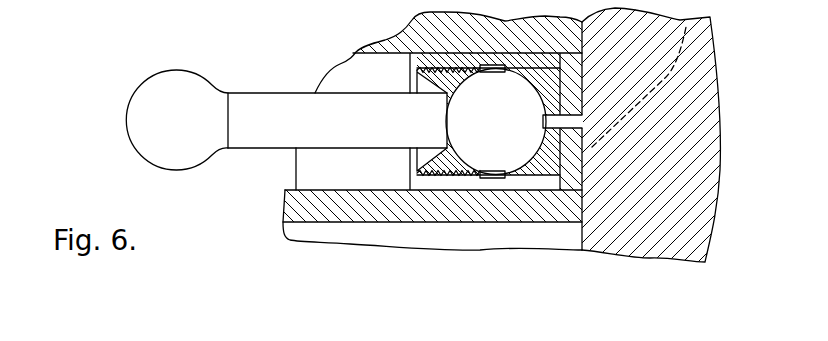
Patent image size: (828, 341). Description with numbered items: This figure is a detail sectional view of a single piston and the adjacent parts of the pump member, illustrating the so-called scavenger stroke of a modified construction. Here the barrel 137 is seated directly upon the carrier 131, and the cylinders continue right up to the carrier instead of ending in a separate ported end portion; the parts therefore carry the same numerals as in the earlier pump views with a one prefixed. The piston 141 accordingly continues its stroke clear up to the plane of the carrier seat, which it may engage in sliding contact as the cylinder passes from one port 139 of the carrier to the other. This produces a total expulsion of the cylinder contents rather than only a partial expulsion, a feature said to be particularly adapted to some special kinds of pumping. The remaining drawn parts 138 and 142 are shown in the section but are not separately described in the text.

The carrier 131 is at (672, 262).
The barrel 137 is at (428, 222).
The bore opening 138 is at (360, 178).
The port of the carrier 139 is at (590, 142).
The piston 141 is at (527, 180).
The ball-ended shaft 142 is at (272, 103).